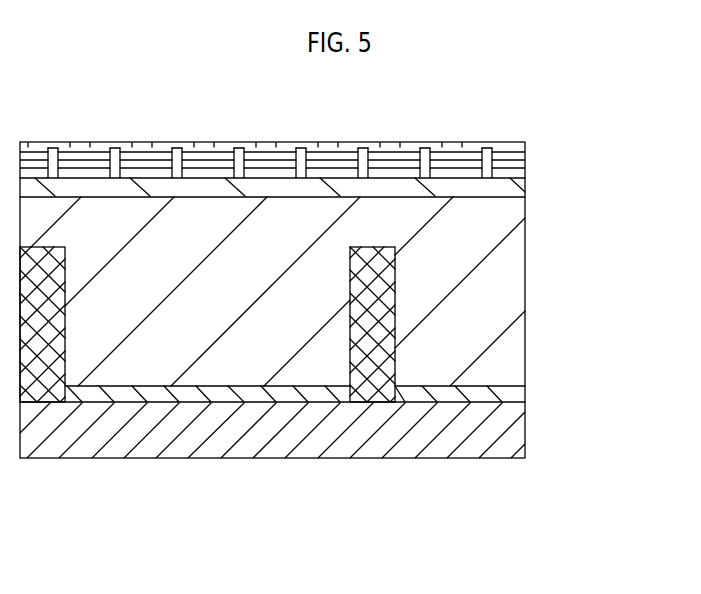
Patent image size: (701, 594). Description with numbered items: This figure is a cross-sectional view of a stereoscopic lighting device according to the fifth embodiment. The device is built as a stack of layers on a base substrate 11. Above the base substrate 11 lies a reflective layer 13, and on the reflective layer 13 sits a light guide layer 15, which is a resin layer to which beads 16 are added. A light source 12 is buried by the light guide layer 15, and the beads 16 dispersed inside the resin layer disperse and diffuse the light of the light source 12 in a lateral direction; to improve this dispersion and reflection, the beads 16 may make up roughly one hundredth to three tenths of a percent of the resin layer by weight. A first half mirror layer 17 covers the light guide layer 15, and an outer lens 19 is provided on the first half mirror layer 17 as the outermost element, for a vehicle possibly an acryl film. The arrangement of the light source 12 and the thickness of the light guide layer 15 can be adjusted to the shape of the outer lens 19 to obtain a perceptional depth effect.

The base substrate 11 is at (516, 435).
The light source 12 is at (50, 395).
The reflective layer 13 is at (521, 393).
The light guide layer 15 is at (506, 250).
The beads 16 is at (514, 351).
The first half mirror layer 17 is at (522, 184).
The outer lens 19 is at (508, 147).